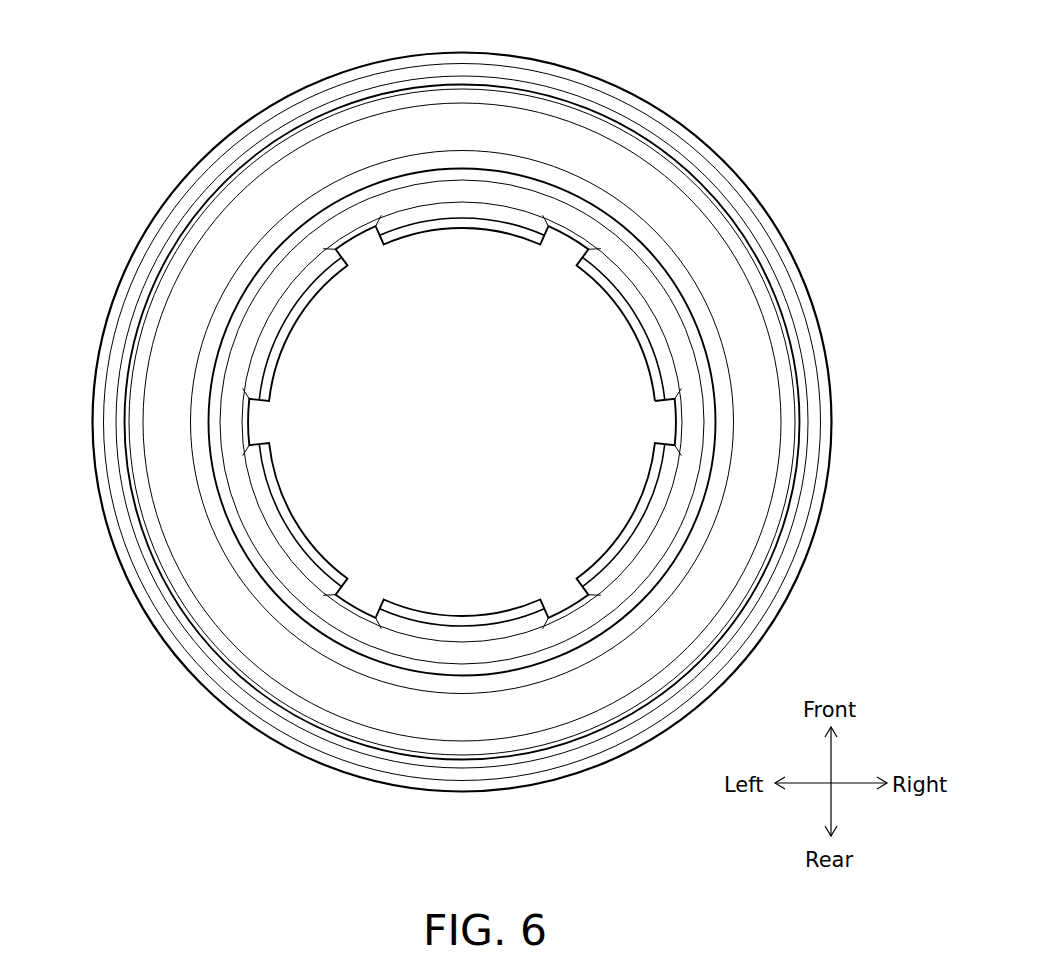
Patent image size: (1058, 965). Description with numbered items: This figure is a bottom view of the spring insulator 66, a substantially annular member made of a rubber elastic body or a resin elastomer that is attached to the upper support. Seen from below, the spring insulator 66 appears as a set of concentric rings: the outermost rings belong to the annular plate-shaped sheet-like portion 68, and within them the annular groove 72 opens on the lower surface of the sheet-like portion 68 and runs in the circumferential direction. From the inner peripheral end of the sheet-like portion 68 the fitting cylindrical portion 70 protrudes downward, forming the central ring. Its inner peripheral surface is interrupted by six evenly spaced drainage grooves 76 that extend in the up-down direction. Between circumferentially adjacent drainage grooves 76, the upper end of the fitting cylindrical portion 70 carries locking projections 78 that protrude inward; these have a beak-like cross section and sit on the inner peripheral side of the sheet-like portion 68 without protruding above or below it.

The spring insulator 66 is at (782, 165).
The sheet-like portion 68 is at (222, 166).
The fitting cylindrical portion 70 is at (245, 343).
The annular groove 72 is at (526, 100).
The drainage grooves 76 is at (371, 236).
The locking projections 78 is at (474, 232).